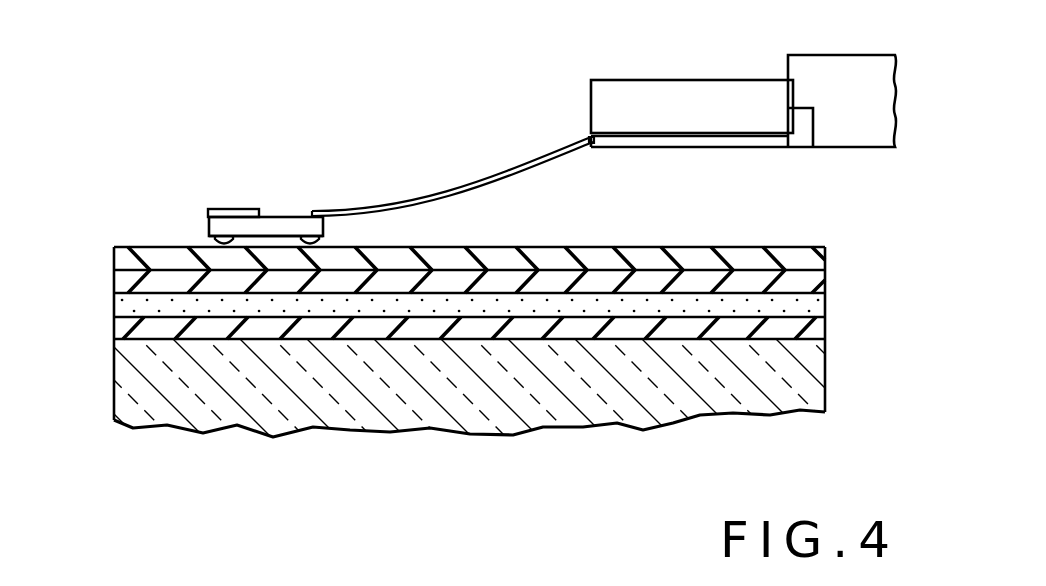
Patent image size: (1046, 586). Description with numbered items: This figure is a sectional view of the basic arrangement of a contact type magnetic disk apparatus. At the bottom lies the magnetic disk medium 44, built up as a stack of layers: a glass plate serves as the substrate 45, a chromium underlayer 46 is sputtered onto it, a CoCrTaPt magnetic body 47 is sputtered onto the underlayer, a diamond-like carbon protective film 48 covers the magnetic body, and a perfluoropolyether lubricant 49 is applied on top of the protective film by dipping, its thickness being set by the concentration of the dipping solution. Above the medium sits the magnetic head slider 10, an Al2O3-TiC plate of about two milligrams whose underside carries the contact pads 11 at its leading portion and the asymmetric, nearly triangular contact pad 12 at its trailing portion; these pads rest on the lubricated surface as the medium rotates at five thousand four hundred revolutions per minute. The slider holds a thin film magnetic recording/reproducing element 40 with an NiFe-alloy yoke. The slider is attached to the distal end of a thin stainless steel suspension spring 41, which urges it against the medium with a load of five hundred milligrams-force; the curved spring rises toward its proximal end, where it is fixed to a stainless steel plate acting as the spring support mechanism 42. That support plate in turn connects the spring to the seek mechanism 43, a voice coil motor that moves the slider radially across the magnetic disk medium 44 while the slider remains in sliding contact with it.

The magnetic head slider 10 is at (295, 217).
The contact pads 11 is at (343, 238).
The asymmetric contact pad 12 is at (210, 237).
The magnetic recording/reproducing element 40 is at (230, 209).
The suspension spring 41 is at (425, 209).
The spring support mechanism 42 is at (632, 80).
The seek mechanism 43 is at (825, 70).
The magnetic disk medium 44 is at (102, 328).
The substrate 45 is at (522, 390).
The underlayer 46 is at (585, 328).
The magnetic body 47 is at (677, 312).
The protective film 48 is at (822, 285).
The lubricant 49 is at (750, 257).